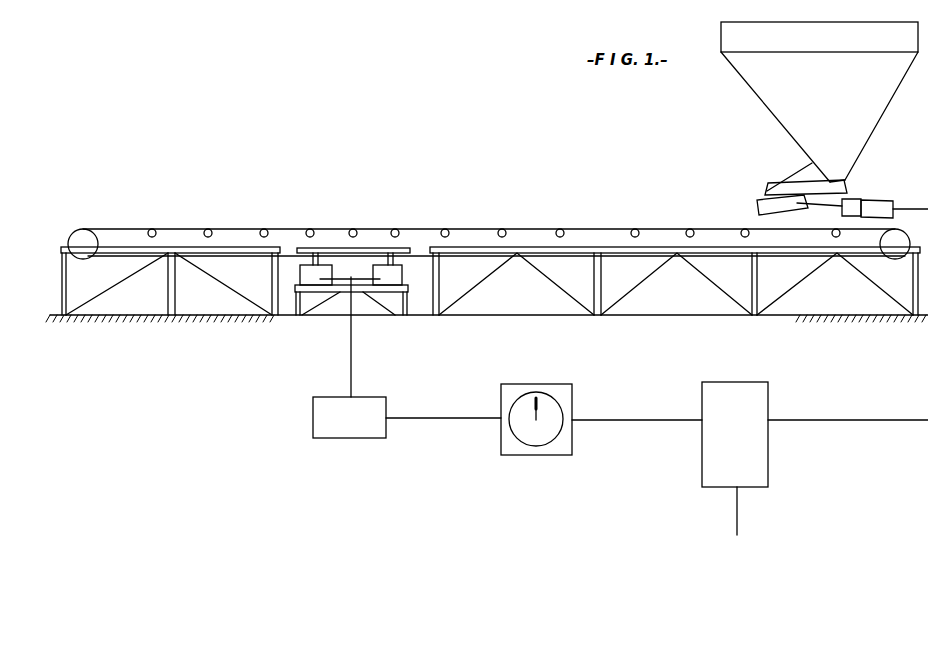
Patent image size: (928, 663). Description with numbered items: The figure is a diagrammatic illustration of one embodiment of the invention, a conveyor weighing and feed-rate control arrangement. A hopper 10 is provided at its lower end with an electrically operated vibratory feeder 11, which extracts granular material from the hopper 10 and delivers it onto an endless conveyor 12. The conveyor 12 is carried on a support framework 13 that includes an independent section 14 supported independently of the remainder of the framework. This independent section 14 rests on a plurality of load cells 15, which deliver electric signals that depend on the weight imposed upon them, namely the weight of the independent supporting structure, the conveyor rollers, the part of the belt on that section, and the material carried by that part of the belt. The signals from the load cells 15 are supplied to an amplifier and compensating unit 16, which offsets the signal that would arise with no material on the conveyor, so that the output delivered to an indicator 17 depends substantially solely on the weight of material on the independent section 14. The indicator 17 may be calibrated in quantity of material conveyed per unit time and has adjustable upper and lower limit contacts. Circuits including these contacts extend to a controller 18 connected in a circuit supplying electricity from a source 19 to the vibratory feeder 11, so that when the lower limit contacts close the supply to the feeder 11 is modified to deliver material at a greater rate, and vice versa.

The hopper 10 is at (828, 109).
The electrically operated vibratory feeder 11 is at (766, 202).
The endless conveyor 12 is at (655, 230).
The support framework 13 is at (180, 252).
The independent section 14 is at (368, 247).
The load cells 15 is at (312, 273).
The amplifier and compensating unit 16 is at (323, 407).
The indicator 17 is at (553, 395).
The controller 18 is at (720, 400).
The source 19 is at (740, 511).